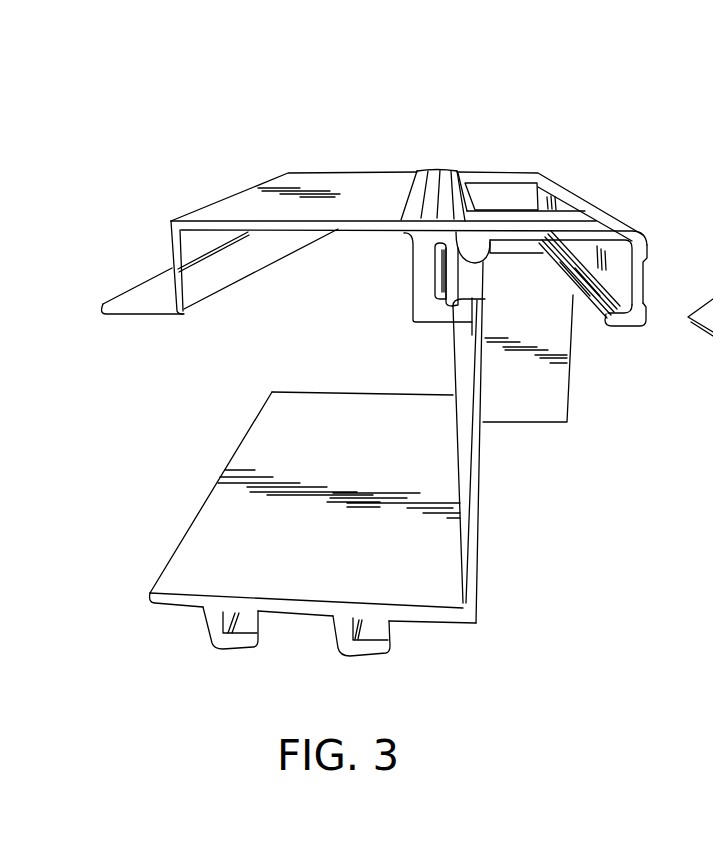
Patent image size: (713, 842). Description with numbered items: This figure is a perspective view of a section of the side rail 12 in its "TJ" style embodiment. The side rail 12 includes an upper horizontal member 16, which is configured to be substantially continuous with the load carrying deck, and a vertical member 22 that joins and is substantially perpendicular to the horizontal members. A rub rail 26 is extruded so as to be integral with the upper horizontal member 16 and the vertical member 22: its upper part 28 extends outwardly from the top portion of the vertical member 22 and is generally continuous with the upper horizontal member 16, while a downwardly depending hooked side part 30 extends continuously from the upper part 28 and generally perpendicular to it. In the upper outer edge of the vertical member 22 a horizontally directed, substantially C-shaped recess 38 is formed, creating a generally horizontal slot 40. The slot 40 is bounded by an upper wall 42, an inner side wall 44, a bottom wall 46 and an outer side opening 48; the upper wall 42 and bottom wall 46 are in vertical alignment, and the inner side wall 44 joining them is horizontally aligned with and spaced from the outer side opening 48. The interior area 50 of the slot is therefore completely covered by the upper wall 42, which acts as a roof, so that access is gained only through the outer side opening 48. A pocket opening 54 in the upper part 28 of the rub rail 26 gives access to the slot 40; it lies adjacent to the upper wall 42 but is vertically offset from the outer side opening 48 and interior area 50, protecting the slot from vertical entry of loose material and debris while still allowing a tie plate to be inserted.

The side rail 12 is at (189, 414).
The upper horizontal member 16 is at (312, 180).
The vertical member 22 is at (480, 524).
The rub rail 26 is at (575, 292).
The upper part 28 is at (595, 215).
The hooked side part 30 is at (645, 276).
The recess 38 is at (410, 288).
The slot 40 is at (472, 270).
The upper wall 42 is at (448, 273).
The inner side wall 44 is at (438, 263).
The bottom wall 46 is at (472, 308).
The outer side opening 48 is at (480, 298).
The interior area 50 is at (437, 249).
The pocket opening 54 is at (524, 187).